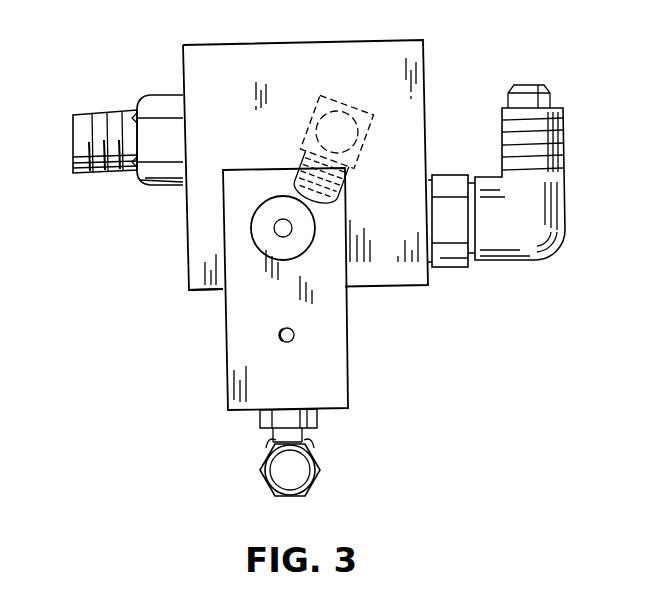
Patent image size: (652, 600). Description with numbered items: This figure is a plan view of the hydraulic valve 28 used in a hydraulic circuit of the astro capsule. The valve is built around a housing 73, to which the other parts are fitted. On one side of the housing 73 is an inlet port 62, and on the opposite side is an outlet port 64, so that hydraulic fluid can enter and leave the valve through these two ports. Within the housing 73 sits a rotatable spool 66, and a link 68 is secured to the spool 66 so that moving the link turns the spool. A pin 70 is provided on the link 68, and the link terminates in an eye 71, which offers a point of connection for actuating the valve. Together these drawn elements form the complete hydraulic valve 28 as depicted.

The hydraulic valve 28 is at (92, 466).
The inlet port 62 is at (115, 177).
The outlet port 64 is at (540, 195).
The rotatable spool 66 is at (262, 226).
The link 68 is at (313, 375).
The pin 70 is at (296, 337).
The eye 71 is at (293, 472).
The housing 73 is at (423, 63).